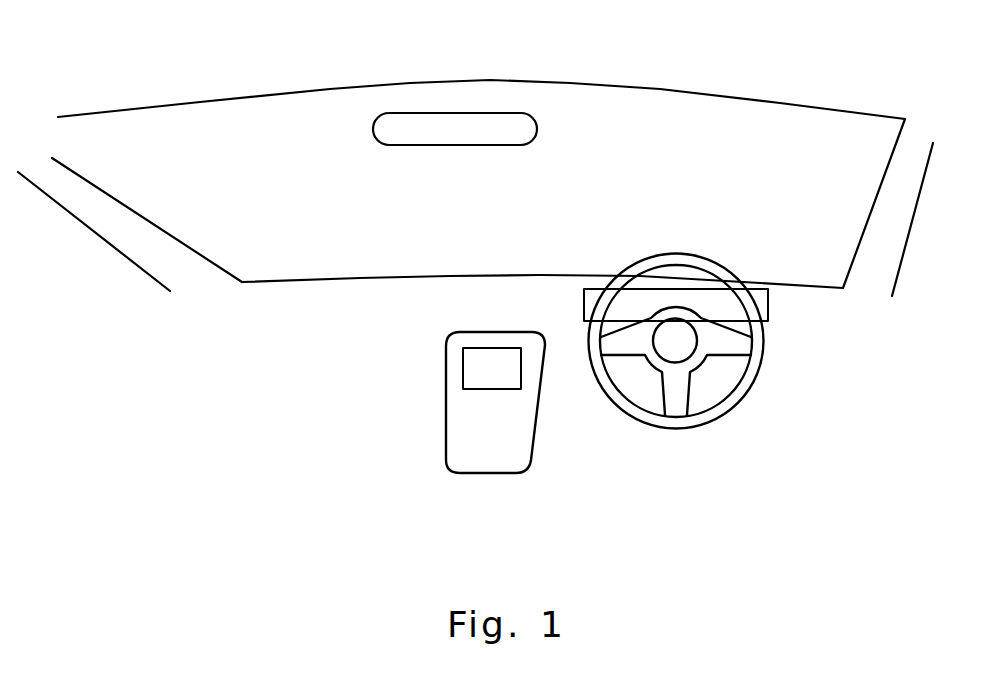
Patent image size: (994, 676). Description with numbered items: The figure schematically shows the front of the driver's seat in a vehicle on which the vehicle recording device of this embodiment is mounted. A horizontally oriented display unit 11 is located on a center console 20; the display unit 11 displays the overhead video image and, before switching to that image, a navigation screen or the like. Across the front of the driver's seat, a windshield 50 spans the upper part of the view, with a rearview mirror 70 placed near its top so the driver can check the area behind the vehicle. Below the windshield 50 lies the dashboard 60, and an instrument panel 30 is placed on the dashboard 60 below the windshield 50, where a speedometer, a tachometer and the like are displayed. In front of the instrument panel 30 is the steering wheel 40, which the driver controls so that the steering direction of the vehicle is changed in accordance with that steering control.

The display unit 11 is at (478, 358).
The center console 20 is at (460, 423).
The instrument panel 30 is at (763, 303).
The steering wheel 40 is at (712, 416).
The windshield 50 is at (768, 120).
The dashboard 60 is at (382, 298).
The rearview mirror 70 is at (519, 125).